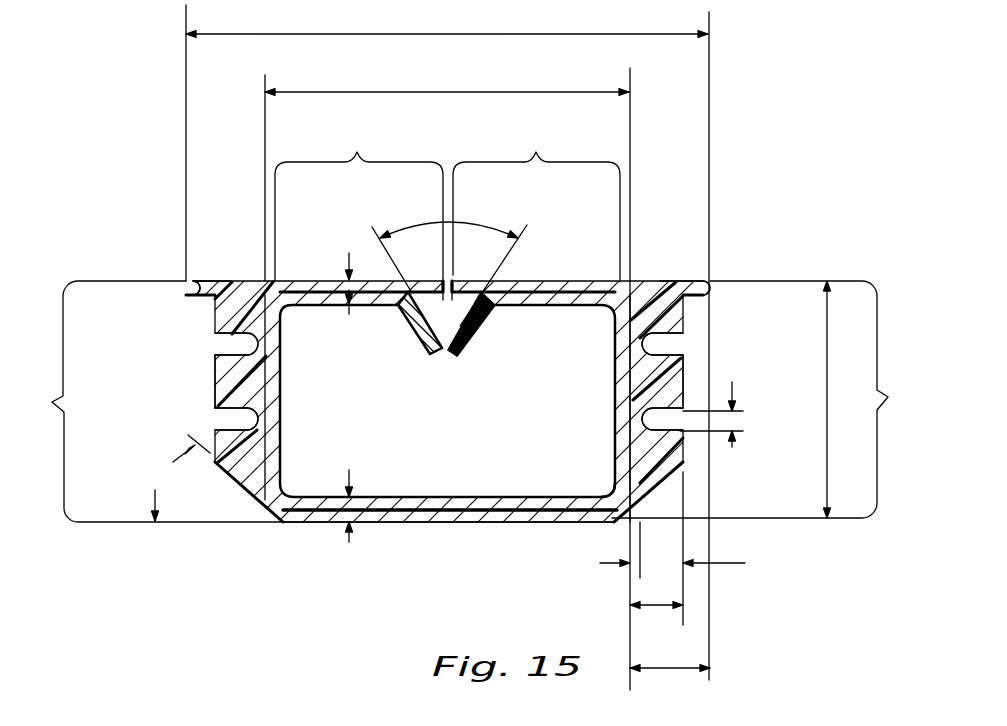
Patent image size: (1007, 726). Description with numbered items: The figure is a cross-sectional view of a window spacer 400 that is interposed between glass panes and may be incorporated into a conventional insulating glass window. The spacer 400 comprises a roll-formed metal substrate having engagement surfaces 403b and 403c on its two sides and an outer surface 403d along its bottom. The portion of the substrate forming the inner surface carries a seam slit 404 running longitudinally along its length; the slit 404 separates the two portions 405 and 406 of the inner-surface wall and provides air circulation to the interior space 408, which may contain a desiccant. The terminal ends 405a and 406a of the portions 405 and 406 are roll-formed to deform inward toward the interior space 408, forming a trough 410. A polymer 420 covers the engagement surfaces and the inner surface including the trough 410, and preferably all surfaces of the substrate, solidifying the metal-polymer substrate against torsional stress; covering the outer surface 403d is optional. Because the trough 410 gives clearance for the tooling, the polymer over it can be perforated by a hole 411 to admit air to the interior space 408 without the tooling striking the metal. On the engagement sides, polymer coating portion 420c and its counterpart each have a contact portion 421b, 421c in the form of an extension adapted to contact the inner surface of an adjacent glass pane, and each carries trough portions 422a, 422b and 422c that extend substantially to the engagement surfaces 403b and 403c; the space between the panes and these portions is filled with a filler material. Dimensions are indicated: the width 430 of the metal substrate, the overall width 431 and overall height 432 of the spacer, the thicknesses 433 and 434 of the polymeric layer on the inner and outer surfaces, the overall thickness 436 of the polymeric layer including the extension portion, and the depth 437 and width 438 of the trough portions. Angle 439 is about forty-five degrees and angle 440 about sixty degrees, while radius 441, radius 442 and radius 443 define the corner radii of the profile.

The spacer 400 is at (652, 13).
The engagement surface 403b is at (230, 383).
The engagement surface 403c is at (677, 375).
The outer surface 403d is at (470, 515).
The seam slit 404 is at (450, 367).
The portion 405 is at (359, 202).
The terminal end 405a is at (423, 342).
The portion 406 is at (536, 202).
The terminal end 406a is at (480, 337).
The interior space 408 is at (399, 468).
The trough 410 is at (440, 362).
The hole 411 is at (458, 277).
The polymer 420 is at (186, 245).
The polymer coating portion 420c is at (887, 396).
The contact portion 421b is at (186, 280).
The contact portion 421c is at (690, 280).
The trough portion 422a is at (680, 421).
The trough portion 422b is at (222, 418).
The trough portion 422c is at (222, 342).
The width of the metal substrate 430 is at (337, 90).
The overall width 431 is at (218, 33).
The overall height 432 is at (827, 307).
The thickness of the polymeric layer on the inner surface 433 is at (745, 636).
The thickness of the polymeric layer on the outer surface 434 is at (356, 522).
The overall thickness of the polymeric layer 436 is at (683, 668).
The depth of troughs 437 is at (696, 564).
The width of troughs 438 is at (722, 430).
The angle 439 is at (178, 478).
The angle 440 is at (412, 222).
The radius 441 is at (183, 293).
The radius 442 is at (601, 493).
The radius 443 is at (274, 522).